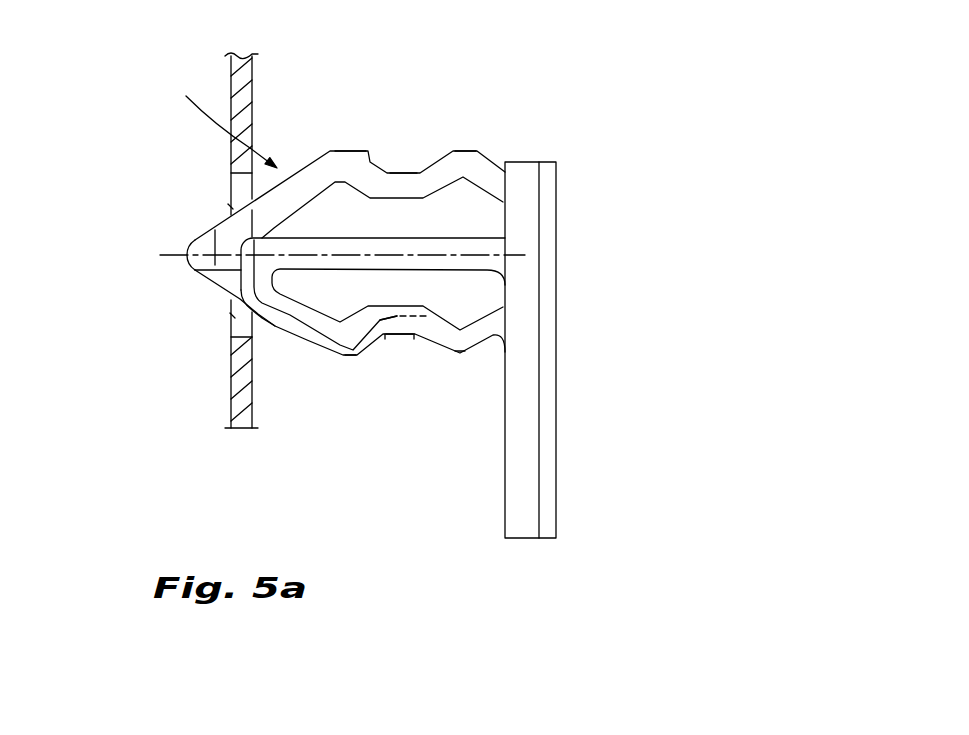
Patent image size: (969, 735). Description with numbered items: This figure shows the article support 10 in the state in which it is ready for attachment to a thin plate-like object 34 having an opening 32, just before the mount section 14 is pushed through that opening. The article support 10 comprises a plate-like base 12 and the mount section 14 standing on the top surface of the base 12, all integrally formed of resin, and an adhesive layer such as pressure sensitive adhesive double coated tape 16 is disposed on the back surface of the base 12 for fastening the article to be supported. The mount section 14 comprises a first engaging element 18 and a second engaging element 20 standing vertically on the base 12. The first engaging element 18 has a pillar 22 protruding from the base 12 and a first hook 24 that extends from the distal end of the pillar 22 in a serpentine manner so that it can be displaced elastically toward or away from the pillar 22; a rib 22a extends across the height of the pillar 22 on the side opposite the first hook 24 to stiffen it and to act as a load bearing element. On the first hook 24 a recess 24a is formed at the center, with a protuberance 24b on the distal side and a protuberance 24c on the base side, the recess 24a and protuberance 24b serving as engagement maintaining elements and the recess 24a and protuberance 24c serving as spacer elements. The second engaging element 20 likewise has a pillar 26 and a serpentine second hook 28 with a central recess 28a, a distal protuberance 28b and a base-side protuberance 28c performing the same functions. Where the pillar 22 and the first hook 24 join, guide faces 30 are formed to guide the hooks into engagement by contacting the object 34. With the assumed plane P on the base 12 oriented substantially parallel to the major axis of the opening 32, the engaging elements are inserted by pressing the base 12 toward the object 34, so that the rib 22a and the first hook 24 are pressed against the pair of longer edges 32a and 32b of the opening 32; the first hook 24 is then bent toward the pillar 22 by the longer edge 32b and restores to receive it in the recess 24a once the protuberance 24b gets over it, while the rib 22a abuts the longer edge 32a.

The article support 10 is at (330, 364).
The base 12 is at (497, 527).
The mount section 14 is at (220, 116).
The pressure sensitive adhesive double coated tape 16 is at (546, 532).
The first engaging element 18 is at (184, 237).
The second engaging element 20 is at (226, 283).
The pillar 22 is at (288, 336).
The rib 22a is at (393, 341).
The first hook 24 is at (320, 163).
The recess 24a is at (398, 170).
The protuberance 24b is at (354, 150).
The protuberance 24c is at (466, 150).
The pillar 26 is at (443, 247).
The second hook 28 is at (320, 330).
The recess 28a is at (407, 335).
The protuberance 28b is at (351, 350).
The protuberance 28c is at (463, 348).
The guide faces 30 is at (230, 206).
The opening 32 is at (173, 290).
The longer edge 32a is at (233, 338).
The longer edge 32b is at (229, 184).
The object 34 is at (224, 66).
The assumed plane P is at (170, 258).